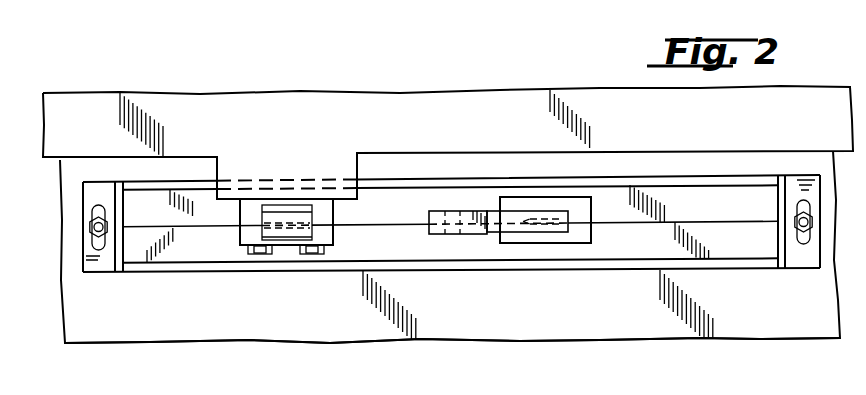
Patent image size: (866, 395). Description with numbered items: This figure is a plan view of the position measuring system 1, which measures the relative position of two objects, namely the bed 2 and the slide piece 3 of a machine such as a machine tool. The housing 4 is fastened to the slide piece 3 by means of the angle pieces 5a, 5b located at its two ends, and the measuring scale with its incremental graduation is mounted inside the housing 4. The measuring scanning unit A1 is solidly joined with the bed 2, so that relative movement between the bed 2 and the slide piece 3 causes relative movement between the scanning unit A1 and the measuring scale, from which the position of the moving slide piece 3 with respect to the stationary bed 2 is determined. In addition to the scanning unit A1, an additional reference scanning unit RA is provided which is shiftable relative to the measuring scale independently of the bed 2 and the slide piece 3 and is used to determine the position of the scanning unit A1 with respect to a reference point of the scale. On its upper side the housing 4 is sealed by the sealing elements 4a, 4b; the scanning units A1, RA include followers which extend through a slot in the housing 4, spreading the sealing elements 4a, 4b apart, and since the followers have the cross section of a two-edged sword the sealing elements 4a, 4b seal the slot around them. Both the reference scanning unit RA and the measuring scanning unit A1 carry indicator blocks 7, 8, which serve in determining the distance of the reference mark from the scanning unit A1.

The position measuring system 1 is at (475, 170).
The bed 2 is at (417, 107).
The slide piece 3 is at (513, 322).
The housing 4 is at (733, 247).
The sealing element 4a is at (703, 195).
The sealing element 4b is at (759, 247).
The angle piece 5a is at (98, 192).
The angle piece 5b is at (803, 258).
The indicator block 7 is at (455, 234).
The indicator block 8 is at (286, 238).
The measuring scanning unit A1 is at (243, 242).
The reference scanning unit RA is at (578, 244).